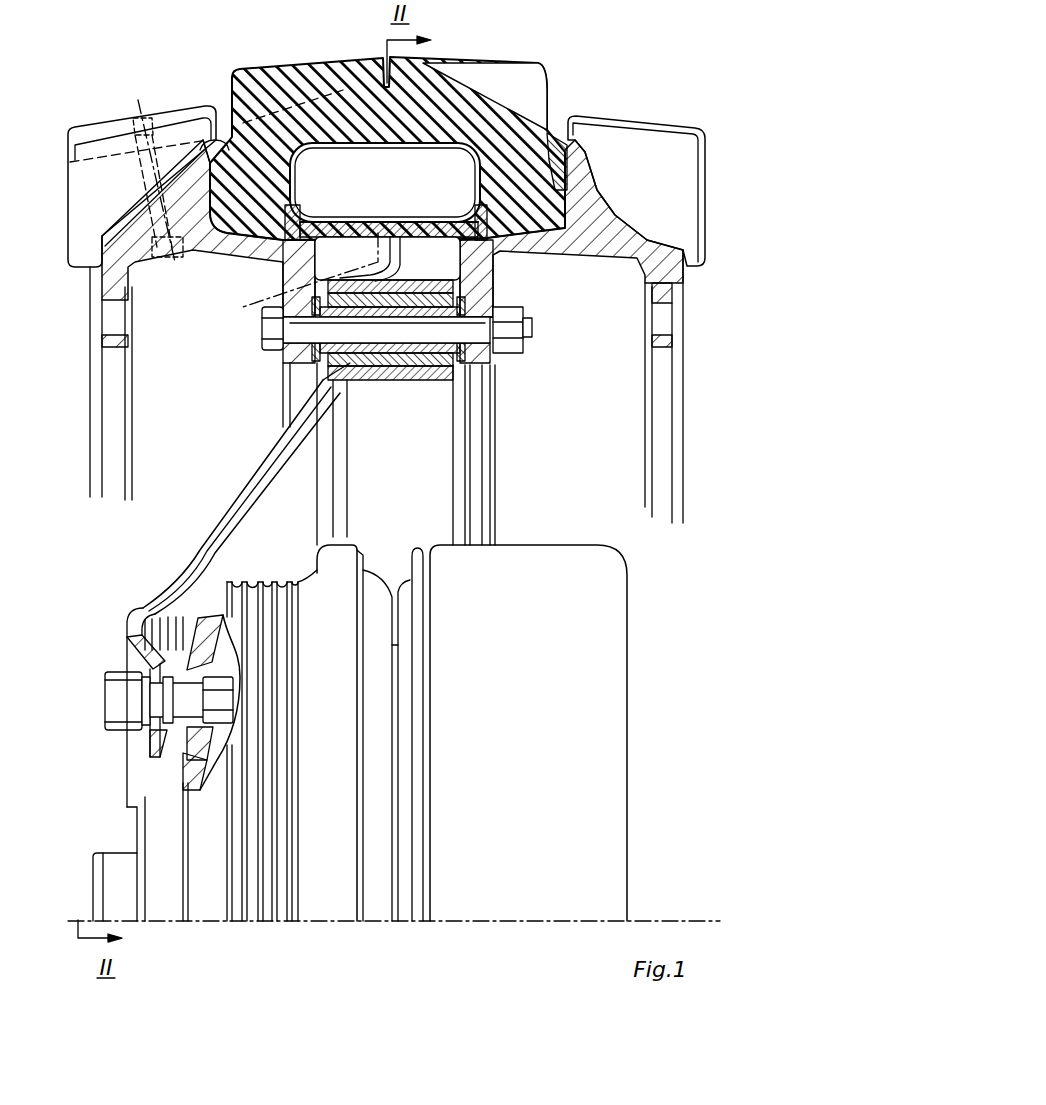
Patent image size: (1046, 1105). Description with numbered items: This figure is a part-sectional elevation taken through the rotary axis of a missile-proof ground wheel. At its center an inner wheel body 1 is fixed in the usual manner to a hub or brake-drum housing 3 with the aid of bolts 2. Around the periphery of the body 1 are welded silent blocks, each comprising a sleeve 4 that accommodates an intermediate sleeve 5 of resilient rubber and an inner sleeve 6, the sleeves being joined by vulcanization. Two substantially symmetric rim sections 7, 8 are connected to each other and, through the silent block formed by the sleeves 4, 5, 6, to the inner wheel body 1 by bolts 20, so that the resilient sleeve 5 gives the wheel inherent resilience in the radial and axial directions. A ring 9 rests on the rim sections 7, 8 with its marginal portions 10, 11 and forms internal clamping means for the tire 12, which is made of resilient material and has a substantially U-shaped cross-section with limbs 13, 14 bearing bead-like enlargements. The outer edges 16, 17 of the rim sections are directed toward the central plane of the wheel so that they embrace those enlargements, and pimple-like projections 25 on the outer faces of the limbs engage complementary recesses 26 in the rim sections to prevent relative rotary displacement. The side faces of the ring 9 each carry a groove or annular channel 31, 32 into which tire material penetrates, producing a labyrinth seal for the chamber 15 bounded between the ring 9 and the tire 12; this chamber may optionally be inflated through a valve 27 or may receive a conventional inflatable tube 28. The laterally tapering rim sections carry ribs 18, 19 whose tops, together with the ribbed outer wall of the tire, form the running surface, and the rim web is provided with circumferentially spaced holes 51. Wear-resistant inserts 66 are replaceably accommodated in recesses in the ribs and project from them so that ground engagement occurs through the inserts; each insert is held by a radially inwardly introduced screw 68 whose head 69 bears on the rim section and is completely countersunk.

The inner wheel body 1 is at (245, 503).
The bolts 2 is at (112, 714).
The hub or brake-drum housing 3 is at (343, 557).
The sleeve 4 is at (415, 372).
The intermediate sleeve 5 is at (383, 362).
The inner sleeve 6 is at (355, 372).
The rim section 7 is at (242, 247).
The rim section 8 is at (568, 235).
The ring 9 is at (365, 224).
The marginal portion 10 is at (323, 222).
The marginal portion 11 is at (443, 222).
The tire 12 is at (317, 83).
The limb 13 is at (273, 230).
The limb 14 is at (513, 217).
The chamber 15 is at (361, 189).
The outer edge 16 is at (217, 157).
The outer edge 17 is at (553, 157).
The rib 18 is at (81, 210).
The rib 19 is at (619, 179).
The bolts 20 is at (302, 333).
The pimple-like projections 25 is at (217, 177).
The recesses 26 is at (212, 217).
The valve 27 is at (257, 293).
The inflatable tube 28 is at (313, 152).
The groove or annular channel 31 is at (297, 217).
The groove or annular channel 32 is at (473, 213).
The holes 51 is at (103, 300).
The inserts 66 is at (113, 127).
The screw 68 is at (150, 190).
The head 69 is at (170, 237).